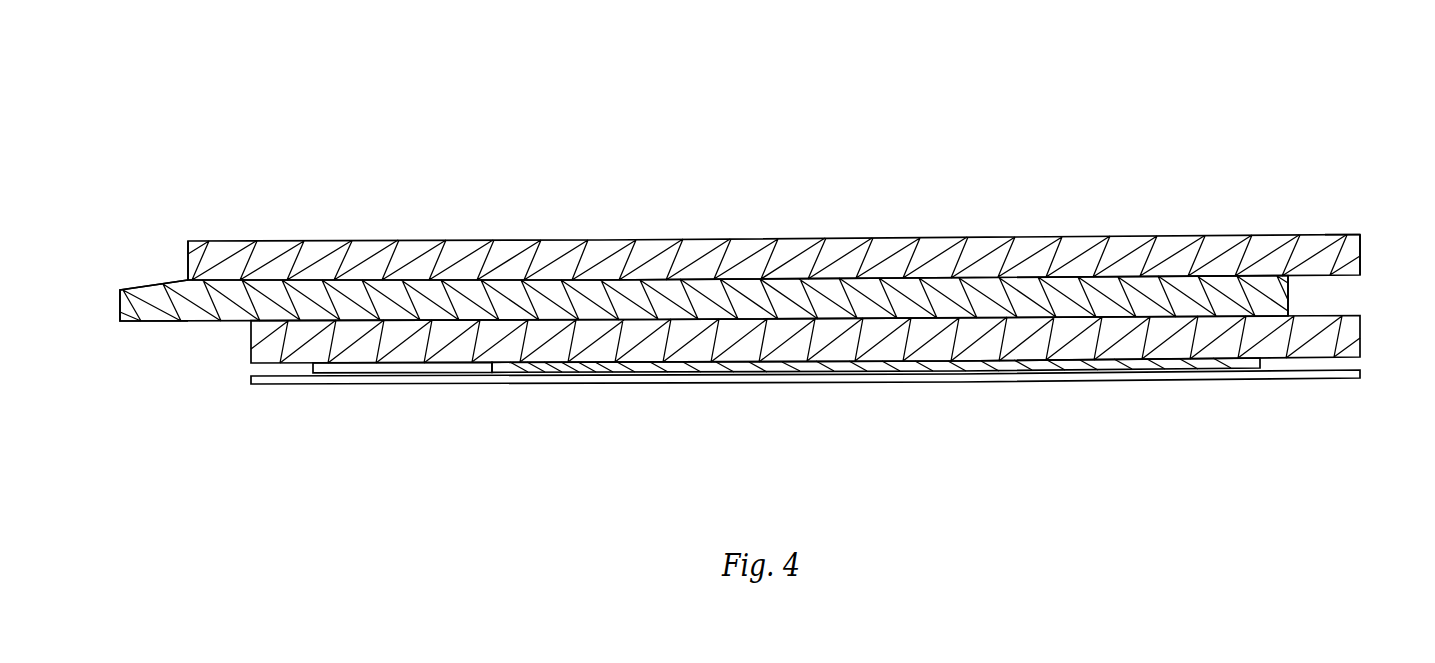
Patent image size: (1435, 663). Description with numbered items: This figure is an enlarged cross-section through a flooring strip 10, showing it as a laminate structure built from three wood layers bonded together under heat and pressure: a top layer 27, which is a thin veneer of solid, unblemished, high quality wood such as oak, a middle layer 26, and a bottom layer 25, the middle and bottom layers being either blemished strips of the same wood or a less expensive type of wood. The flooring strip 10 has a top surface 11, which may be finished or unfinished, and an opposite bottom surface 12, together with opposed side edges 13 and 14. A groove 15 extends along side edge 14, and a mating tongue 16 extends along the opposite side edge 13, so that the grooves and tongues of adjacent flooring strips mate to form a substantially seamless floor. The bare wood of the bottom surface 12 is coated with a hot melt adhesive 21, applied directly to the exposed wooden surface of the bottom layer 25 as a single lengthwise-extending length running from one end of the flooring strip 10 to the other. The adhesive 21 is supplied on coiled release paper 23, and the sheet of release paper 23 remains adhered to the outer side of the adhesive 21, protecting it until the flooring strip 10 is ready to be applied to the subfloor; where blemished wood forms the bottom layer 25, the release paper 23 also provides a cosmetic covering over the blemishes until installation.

The flooring strip 10 is at (517, 147).
The top surface 11 is at (707, 238).
The bottom surface 12 is at (313, 365).
The side edge 13 is at (187, 268).
The side edge 14 is at (1362, 253).
The groove 15 is at (1306, 278).
The tongue 16 is at (132, 316).
The hot melt adhesive 21 is at (592, 370).
The release paper 23 is at (855, 378).
The bottom layer 25 is at (1357, 330).
The middle layer 26 is at (1278, 304).
The top layer 27 is at (1355, 250).